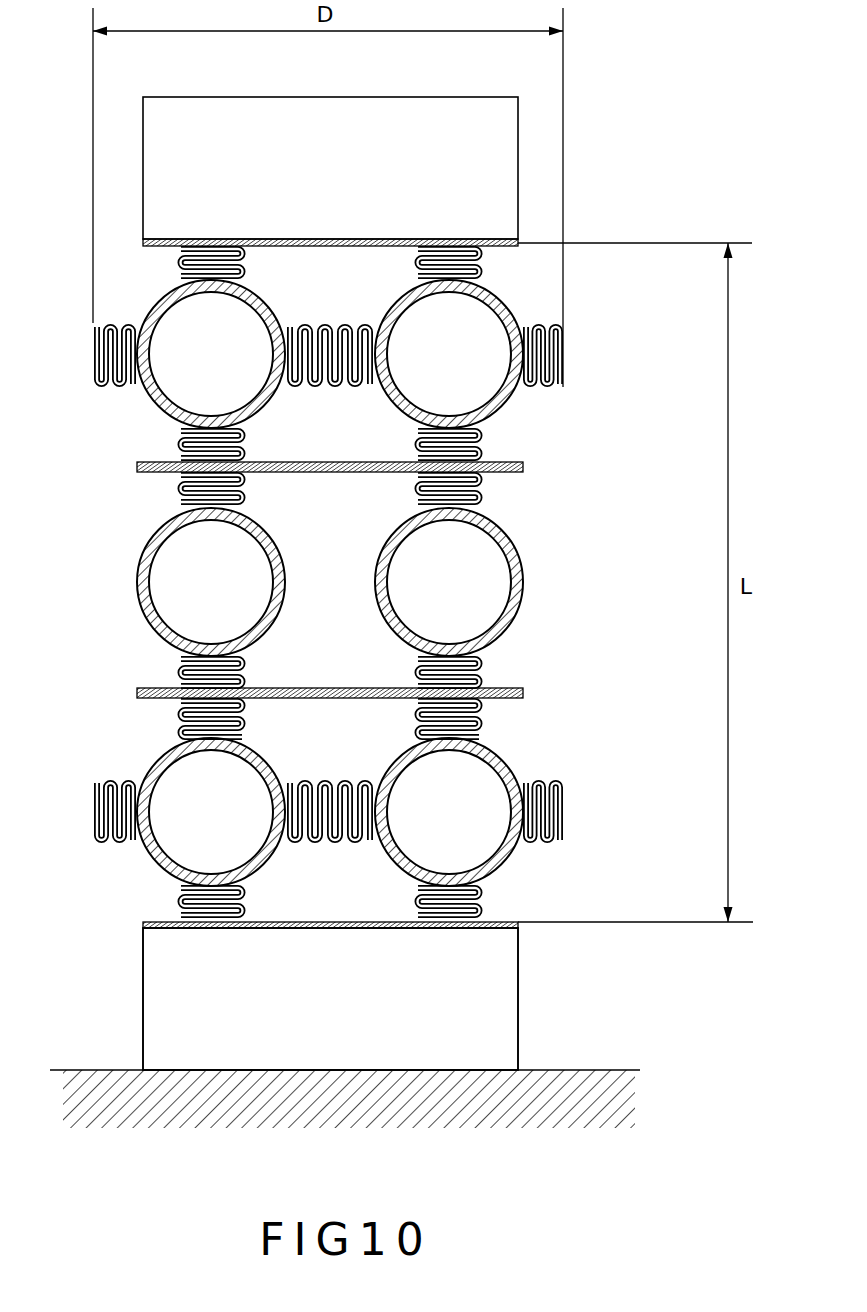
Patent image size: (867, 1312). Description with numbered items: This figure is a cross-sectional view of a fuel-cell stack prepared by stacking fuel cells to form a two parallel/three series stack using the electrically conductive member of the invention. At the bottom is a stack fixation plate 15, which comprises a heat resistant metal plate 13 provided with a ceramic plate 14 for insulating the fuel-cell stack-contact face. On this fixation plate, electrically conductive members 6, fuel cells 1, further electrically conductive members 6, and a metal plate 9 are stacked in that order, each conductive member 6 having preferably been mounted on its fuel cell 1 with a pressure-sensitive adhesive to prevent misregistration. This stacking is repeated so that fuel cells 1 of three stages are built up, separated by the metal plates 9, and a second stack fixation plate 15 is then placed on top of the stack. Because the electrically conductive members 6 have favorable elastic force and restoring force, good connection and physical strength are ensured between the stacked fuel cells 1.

The fuel cell 1 is at (142, 422).
The electrically conductive member 6 is at (405, 905).
The metal plate 9 is at (298, 472).
The heat resistant metal plate 13 is at (172, 1025).
The ceramic plate 14 is at (330, 928).
The stack fixation plate 15 is at (420, 82).